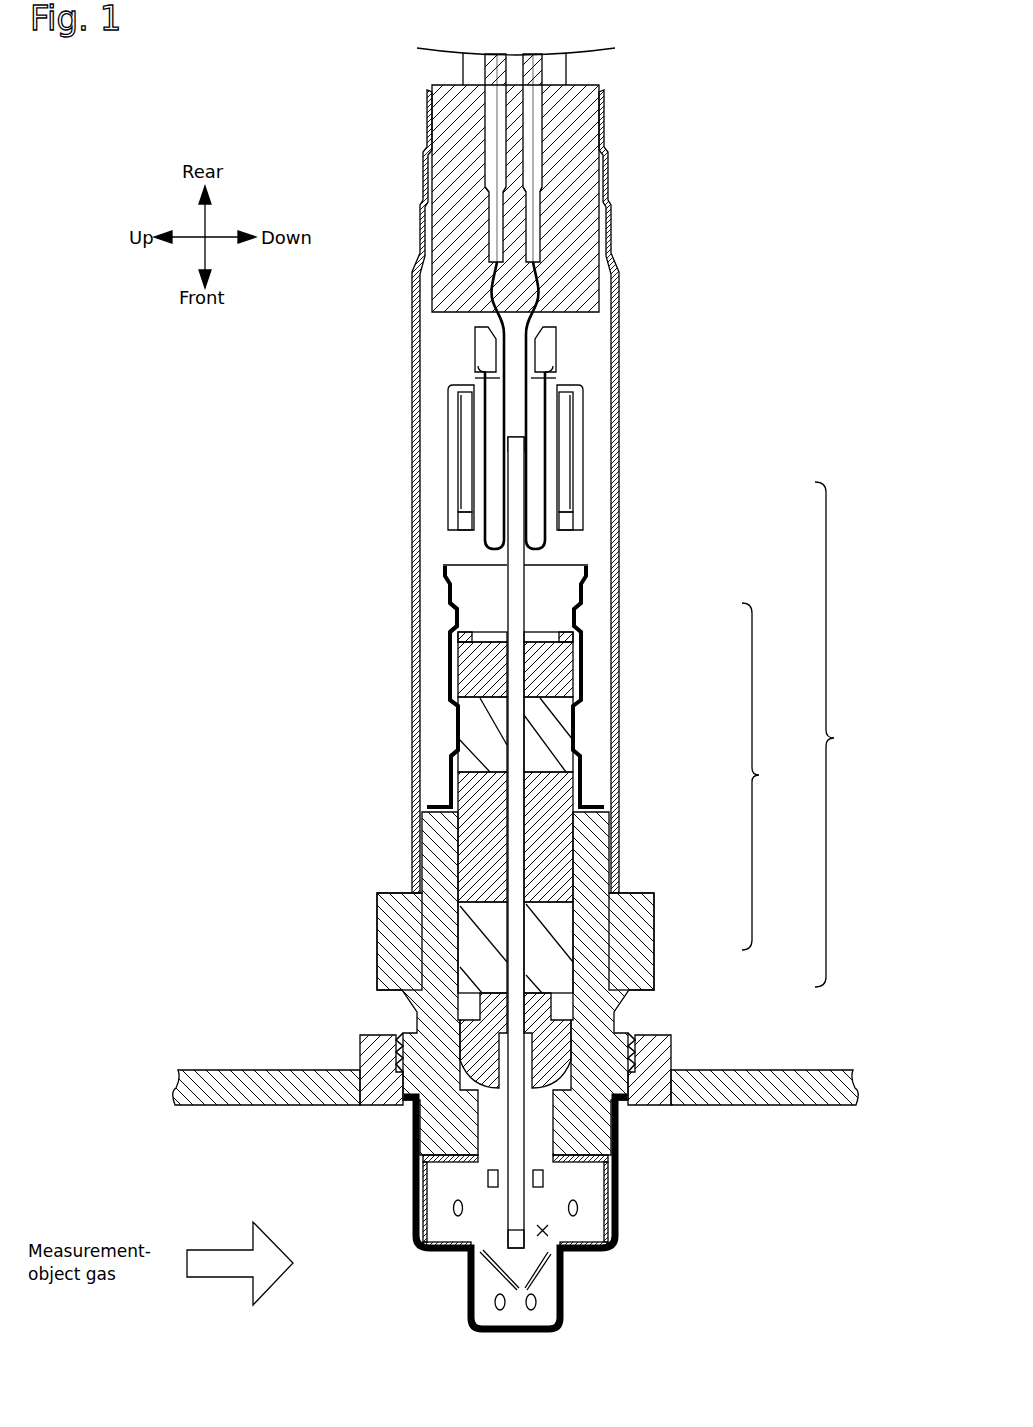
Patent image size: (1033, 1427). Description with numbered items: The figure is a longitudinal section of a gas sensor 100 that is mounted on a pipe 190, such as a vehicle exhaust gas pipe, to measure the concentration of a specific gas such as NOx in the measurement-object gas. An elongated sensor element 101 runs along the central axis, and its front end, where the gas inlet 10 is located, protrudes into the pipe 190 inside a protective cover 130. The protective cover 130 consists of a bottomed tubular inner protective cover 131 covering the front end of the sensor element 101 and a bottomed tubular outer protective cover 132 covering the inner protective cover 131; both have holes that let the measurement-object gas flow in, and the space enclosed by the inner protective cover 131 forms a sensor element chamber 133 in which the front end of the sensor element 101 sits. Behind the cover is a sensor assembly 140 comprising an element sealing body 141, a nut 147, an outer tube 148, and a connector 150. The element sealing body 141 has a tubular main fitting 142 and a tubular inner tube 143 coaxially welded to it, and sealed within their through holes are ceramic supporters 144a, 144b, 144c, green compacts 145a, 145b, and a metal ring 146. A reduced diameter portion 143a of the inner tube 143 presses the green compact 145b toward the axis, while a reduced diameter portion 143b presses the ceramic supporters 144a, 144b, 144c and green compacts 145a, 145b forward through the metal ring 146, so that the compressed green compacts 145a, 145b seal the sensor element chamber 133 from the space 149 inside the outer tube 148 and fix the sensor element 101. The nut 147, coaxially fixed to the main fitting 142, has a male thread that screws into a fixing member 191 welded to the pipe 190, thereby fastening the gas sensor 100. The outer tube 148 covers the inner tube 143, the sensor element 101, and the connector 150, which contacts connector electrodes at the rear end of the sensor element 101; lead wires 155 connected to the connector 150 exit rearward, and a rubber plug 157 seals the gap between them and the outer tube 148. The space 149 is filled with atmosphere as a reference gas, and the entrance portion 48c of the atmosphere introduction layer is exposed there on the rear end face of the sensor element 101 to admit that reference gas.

The gas sensor 100 is at (816, 121).
The gas inlet 10 is at (520, 1252).
The sensor element 101 is at (518, 968).
The entrance portion 48c is at (519, 436).
The protective cover 130 is at (740, 1148).
The inner protective cover 131 is at (561, 1190).
The outer protective cover 132 is at (629, 1205).
The sensor element chamber 133 is at (547, 1232).
The sensor assembly 140 is at (848, 734).
The element sealing body 141 is at (774, 776).
The main fitting 142 is at (598, 1012).
The inner tube 143 is at (578, 593).
The reduced diameter portion 143a is at (458, 726).
The reduced diameter portion 143b is at (459, 613).
The ceramic supporter 144a is at (577, 1028).
The ceramic supporter 144b is at (561, 828).
The ceramic supporter 144c is at (568, 676).
The green compact 145a is at (566, 920).
The green compact 145b is at (561, 745).
The metal ring 146 is at (568, 635).
The nut 147 is at (653, 975).
The outer tube 148 is at (619, 551).
The space 149 is at (585, 355).
The connector 150 is at (581, 513).
The lead wires 155 is at (496, 134).
The rubber plug 157 is at (570, 281).
The pipe 190 is at (257, 1087).
The fixing member 191 is at (372, 1037).